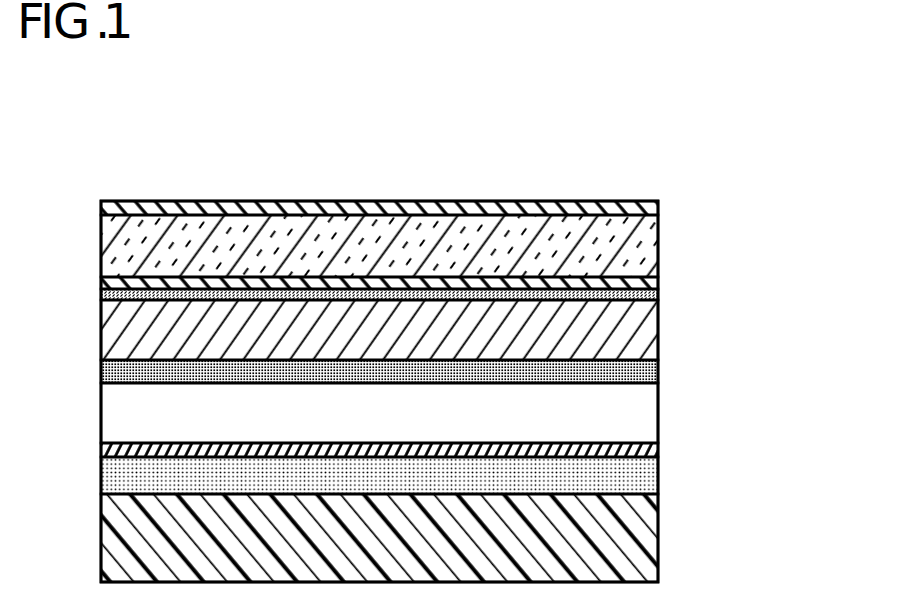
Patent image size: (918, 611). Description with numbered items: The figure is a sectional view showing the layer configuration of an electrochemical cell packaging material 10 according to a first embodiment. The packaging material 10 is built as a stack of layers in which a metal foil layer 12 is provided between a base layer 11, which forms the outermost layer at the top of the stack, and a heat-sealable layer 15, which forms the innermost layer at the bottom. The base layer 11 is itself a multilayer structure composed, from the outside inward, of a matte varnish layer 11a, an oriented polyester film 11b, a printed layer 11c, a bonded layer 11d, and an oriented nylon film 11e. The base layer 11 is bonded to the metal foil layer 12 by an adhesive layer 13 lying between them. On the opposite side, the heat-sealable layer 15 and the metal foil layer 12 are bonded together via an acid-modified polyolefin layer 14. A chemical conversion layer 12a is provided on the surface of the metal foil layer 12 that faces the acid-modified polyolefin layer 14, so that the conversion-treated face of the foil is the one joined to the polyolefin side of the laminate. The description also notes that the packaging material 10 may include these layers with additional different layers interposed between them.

The electrochemical cell packaging material 10 is at (473, 346).
The base layer 11 is at (473, 285).
The matte varnish layer 11a is at (658, 205).
The oriented polyester film 11b is at (656, 245).
The printed layer 11c is at (658, 282).
The bonded layer 11d is at (656, 300).
The oriented nylon film 11e is at (442, 334).
The metal foil layer 12 is at (628, 408).
The chemical conversion layer 12a is at (658, 450).
The adhesive layer 13 is at (658, 377).
The acid-modified polyolefin layer 14 is at (658, 485).
The heat-sealable layer 15 is at (628, 538).